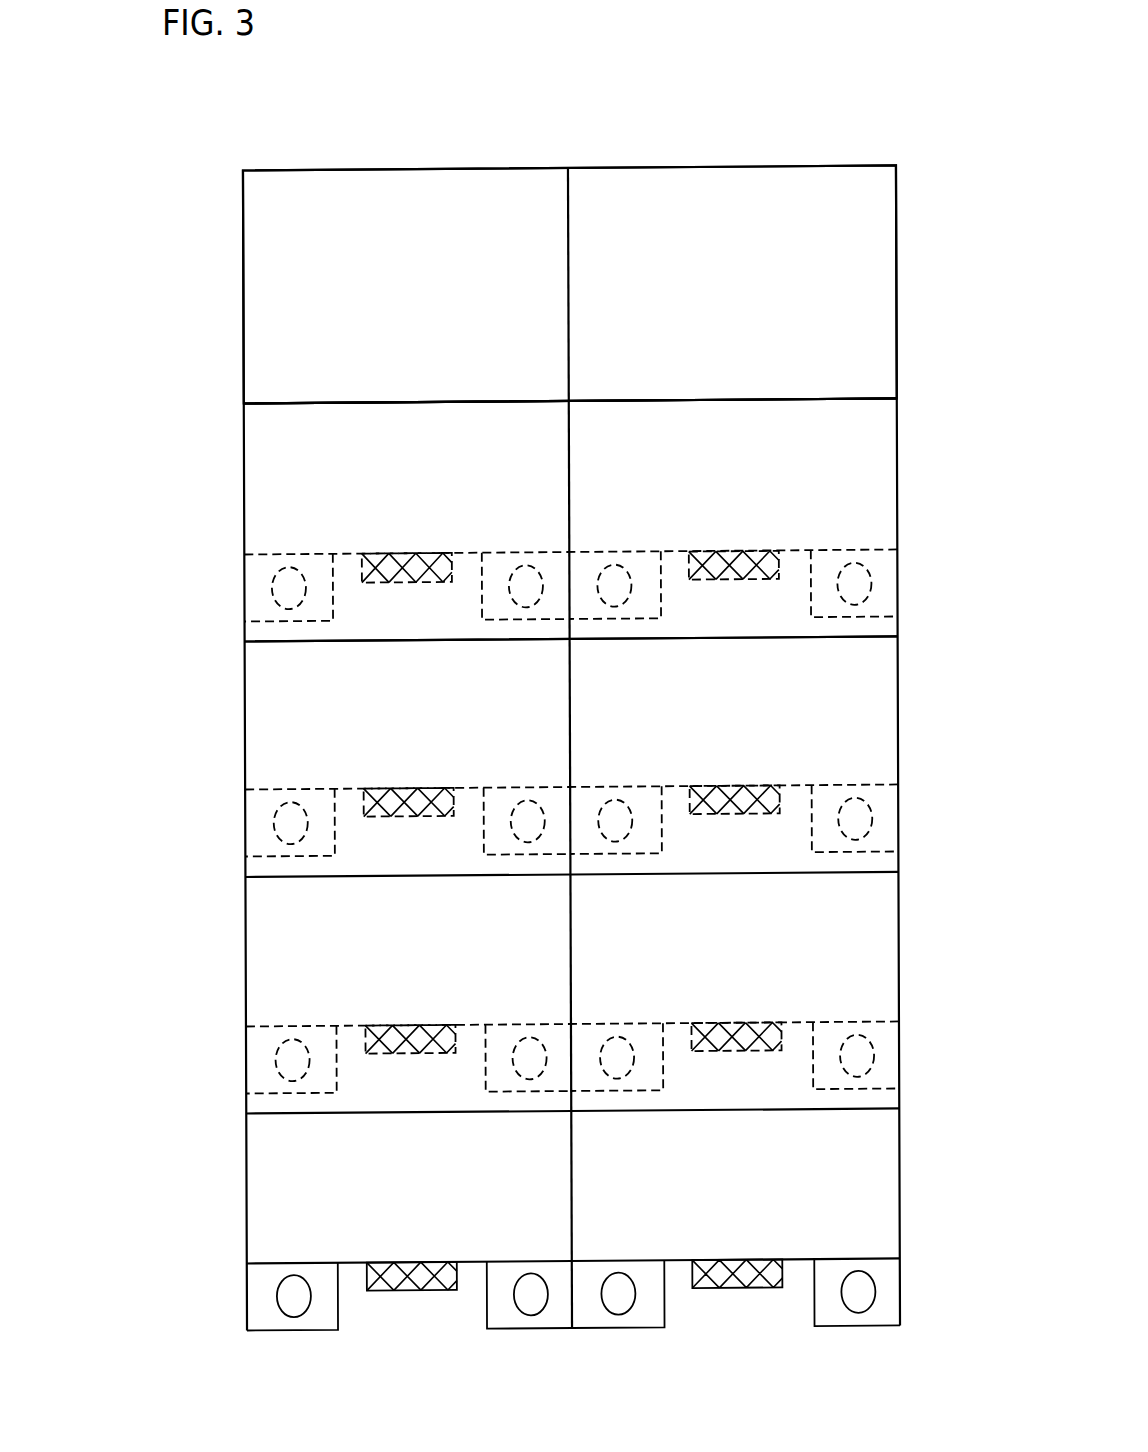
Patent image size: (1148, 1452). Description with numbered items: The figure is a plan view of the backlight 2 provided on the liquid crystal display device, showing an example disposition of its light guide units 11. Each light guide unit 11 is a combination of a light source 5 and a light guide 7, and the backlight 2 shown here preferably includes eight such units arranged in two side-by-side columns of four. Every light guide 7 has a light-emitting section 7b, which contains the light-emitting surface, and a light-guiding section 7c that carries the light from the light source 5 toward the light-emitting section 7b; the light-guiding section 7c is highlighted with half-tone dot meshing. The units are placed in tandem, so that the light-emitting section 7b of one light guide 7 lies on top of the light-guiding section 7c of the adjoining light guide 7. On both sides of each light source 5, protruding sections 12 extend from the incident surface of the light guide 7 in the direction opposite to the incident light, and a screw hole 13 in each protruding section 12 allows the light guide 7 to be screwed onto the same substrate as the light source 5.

The backlight 2 is at (789, 99).
The light source 5 is at (373, 582).
The light guide 7 is at (183, 168).
The light-emitting section 7b is at (298, 271).
The light-guiding section 7c is at (300, 478).
The light guide unit 11 is at (138, 387).
The protruding section 12 is at (262, 568).
The screw hole 13 is at (272, 590).